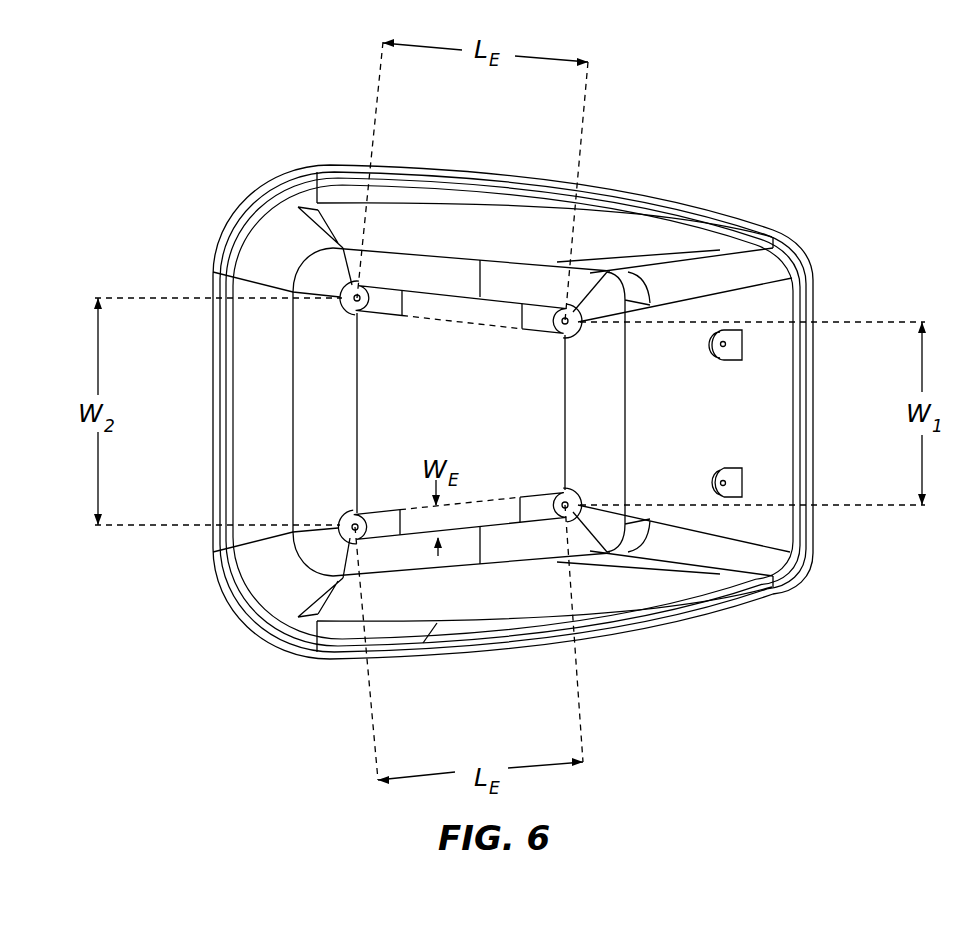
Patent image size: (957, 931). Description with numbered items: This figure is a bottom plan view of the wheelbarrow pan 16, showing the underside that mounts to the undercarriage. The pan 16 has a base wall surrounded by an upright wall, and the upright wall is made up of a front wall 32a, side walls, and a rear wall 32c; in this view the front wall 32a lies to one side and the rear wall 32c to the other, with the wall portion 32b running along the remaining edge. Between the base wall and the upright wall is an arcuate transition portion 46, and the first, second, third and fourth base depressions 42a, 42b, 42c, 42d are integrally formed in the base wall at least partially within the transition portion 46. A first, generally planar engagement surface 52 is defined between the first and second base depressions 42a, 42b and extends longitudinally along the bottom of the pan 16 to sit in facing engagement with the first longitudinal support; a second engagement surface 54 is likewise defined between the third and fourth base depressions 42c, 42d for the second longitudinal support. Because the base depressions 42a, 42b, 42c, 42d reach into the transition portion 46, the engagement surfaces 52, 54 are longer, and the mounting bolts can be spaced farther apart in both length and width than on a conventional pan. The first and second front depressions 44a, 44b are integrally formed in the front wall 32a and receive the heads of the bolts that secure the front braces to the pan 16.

The pan 16 is at (256, 181).
The front wall 32a is at (785, 432).
The top and bottom walls 32b is at (397, 222).
The rear wall 32c is at (243, 383).
The first base depression 42a is at (541, 490).
The second base depression 42b is at (379, 506).
The third base depression 42c is at (546, 331).
The fourth base depression 42d is at (378, 312).
The first front depression 44a is at (748, 475).
The second front depression 44b is at (748, 340).
The transition portion 46 is at (505, 270).
The first engagement surface 52 is at (475, 510).
The second engagement surface 54 is at (449, 305).